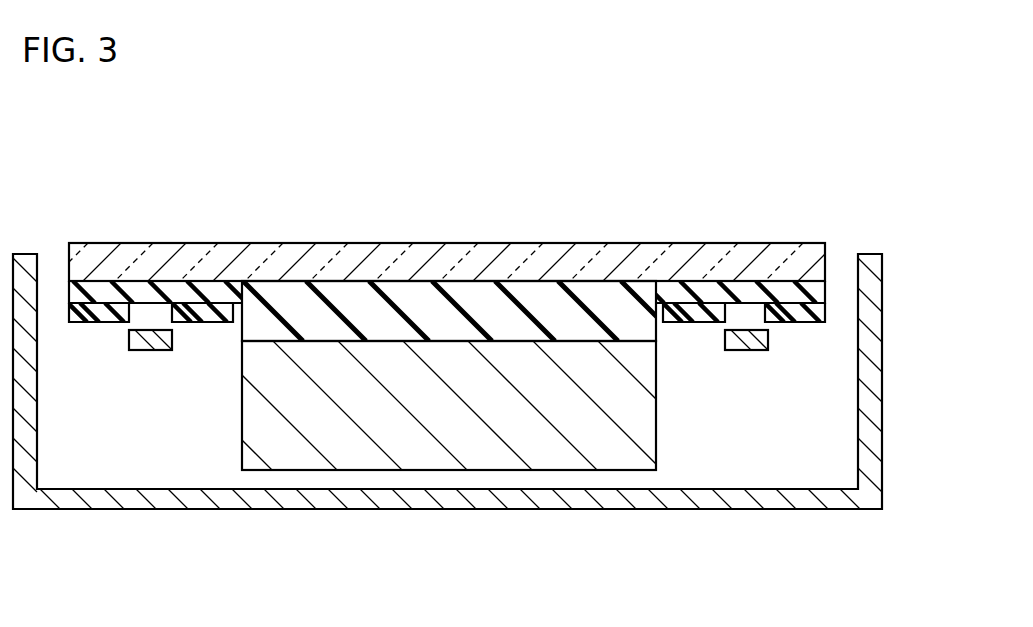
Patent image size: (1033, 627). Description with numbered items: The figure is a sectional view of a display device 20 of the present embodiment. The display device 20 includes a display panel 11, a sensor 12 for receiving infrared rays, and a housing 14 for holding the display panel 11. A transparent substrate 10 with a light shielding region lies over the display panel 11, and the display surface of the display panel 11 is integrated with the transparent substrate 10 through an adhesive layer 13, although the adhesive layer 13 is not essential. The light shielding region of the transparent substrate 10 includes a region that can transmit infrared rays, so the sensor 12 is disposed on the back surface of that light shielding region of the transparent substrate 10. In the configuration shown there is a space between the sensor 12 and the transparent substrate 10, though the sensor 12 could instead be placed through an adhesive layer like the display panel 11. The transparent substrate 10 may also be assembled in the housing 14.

The display device 20 is at (803, 122).
The transparent substrate with a light shielding region 10 is at (786, 229).
The display panel 11 is at (645, 432).
The sensor 12 is at (128, 342).
The adhesive layer 13 is at (647, 328).
The housing 14 is at (660, 500).